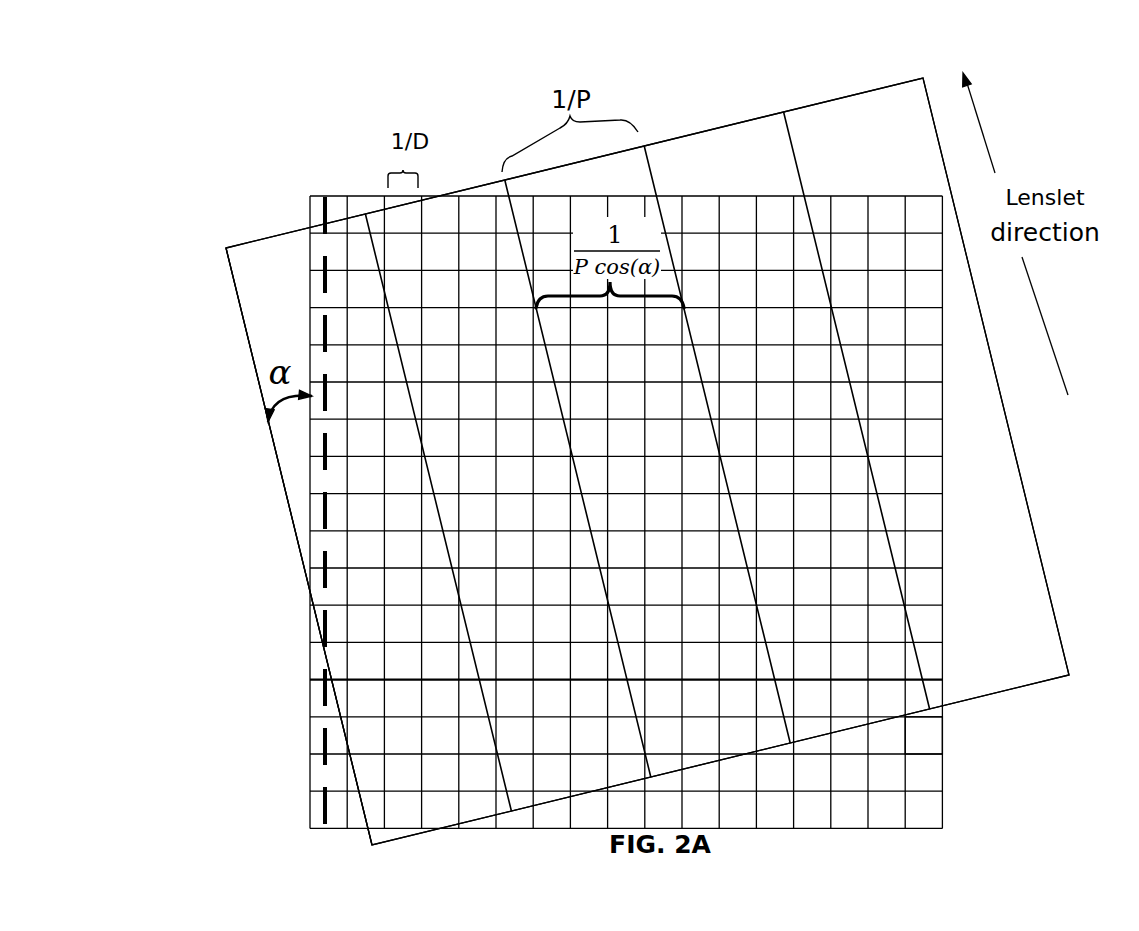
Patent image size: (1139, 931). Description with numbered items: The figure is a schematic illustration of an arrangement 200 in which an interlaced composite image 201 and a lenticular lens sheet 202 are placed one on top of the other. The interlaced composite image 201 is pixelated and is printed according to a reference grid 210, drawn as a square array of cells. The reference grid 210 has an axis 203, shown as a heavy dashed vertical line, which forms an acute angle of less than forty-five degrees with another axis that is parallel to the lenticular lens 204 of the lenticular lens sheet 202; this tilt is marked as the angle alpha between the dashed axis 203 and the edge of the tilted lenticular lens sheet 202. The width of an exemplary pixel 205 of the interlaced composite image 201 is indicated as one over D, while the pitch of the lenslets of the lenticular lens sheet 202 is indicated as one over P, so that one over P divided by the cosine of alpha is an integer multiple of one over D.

The arrangement 200 is at (202, 206).
The interlaced composite image 201 is at (940, 801).
The lenticular lens sheet 202 is at (1000, 645).
The axis 203 is at (318, 215).
The lenticular lens 204 is at (265, 310).
The width of an exemplary pixel 205 is at (402, 113).
The reference grid 210 is at (922, 749).